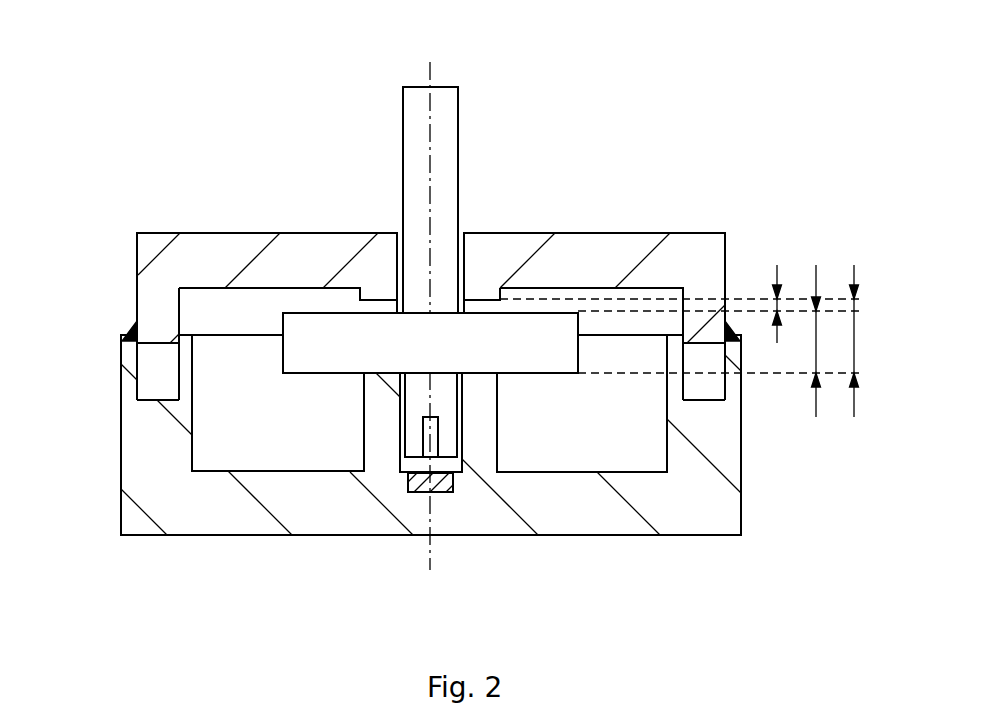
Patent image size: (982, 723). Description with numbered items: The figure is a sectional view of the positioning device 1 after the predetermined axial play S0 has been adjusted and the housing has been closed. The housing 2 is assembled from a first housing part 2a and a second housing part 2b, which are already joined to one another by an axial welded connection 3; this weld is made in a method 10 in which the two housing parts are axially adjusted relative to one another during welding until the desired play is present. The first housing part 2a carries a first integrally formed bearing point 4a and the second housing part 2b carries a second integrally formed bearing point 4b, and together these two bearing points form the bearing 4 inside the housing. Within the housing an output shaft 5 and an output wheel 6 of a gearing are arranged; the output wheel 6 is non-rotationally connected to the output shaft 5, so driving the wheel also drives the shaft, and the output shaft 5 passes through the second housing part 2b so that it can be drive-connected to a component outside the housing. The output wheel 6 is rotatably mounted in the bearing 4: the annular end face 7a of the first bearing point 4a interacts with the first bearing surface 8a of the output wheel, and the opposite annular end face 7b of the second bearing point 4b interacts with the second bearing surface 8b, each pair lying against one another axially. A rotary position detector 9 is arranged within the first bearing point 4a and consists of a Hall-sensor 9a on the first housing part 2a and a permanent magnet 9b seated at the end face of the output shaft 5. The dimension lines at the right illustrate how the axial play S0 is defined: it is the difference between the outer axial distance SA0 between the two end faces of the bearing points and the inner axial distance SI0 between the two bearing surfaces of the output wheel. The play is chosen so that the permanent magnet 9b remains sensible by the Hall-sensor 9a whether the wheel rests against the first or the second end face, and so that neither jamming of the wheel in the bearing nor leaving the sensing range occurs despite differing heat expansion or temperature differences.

The positioning device 1 is at (690, 140).
The method 10 is at (56, 272).
The housing 2 is at (104, 258).
The first housing part 2a is at (699, 514).
The second housing part 2b is at (613, 272).
The welded connection 3 is at (134, 327).
The bearing 4 is at (379, 276).
The first bearing point 4a is at (377, 403).
The second bearing point 4b is at (478, 296).
The output shaft 5 is at (453, 155).
The output wheel 6 is at (470, 354).
The end face of the first bearing point 7a is at (388, 370).
The end face of the second bearing point 7b is at (488, 300).
The first bearing surface 8a is at (533, 374).
The second bearing surface 8b is at (297, 303).
The rotary position detector 9 is at (400, 518).
The Hall-sensor 9a is at (450, 484).
The permanent magnet 9b is at (426, 447).
The axial play S0 is at (778, 284).
The inner axial distance SI0 is at (816, 392).
The outer axial distance SA0 is at (854, 398).